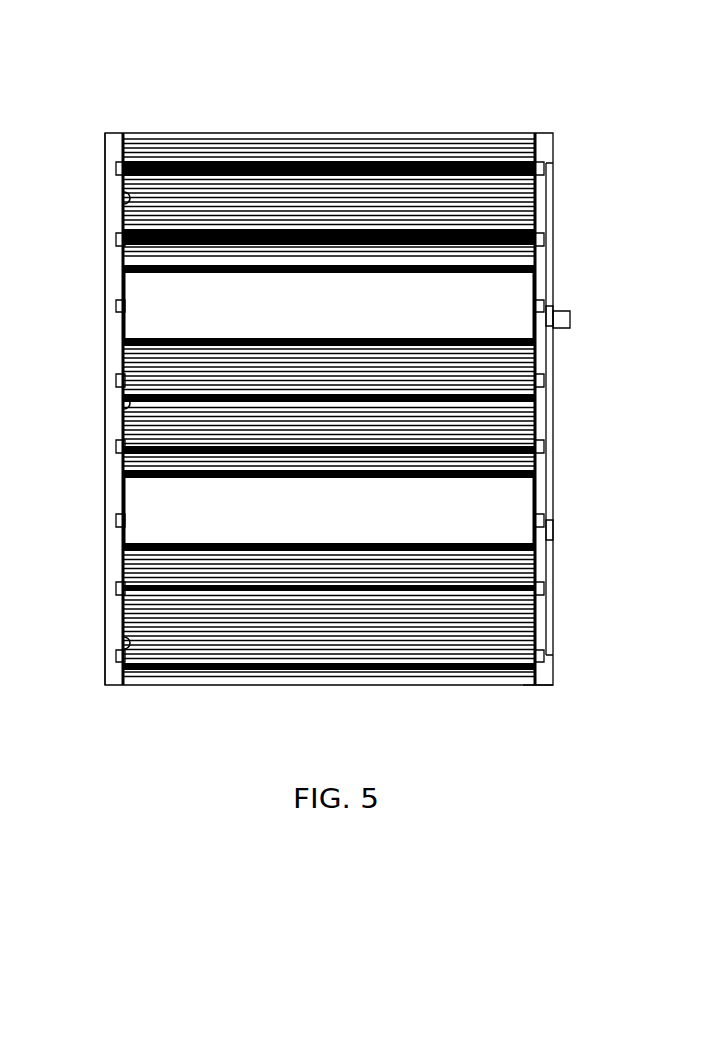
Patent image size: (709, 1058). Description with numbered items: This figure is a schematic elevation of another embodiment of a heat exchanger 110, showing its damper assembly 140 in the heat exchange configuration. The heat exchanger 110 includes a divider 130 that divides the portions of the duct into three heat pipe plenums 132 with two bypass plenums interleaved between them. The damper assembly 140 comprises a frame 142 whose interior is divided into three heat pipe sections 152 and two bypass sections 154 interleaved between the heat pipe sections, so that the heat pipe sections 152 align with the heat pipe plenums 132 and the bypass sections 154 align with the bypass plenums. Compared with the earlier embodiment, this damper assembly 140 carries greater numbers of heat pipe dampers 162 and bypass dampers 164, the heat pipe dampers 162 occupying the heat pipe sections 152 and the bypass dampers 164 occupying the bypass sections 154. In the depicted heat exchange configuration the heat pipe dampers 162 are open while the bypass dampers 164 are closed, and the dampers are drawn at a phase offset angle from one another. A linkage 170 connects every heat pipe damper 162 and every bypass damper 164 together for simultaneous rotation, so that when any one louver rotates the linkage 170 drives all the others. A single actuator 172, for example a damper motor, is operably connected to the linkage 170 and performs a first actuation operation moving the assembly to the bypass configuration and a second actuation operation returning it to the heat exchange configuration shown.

The heat exchanger 110 is at (101, 862).
The divider 130 is at (530, 545).
The heat pipe plenum 132 is at (500, 185).
The damper assembly 140 is at (103, 710).
The frame 142 is at (527, 677).
The heat pipe section 152 is at (117, 198).
The bypass section 154 is at (522, 270).
The heat pipe damper 162 is at (395, 225).
The bypass damper 164 is at (130, 312).
The linkage 170 is at (541, 648).
The actuator 172 is at (562, 312).